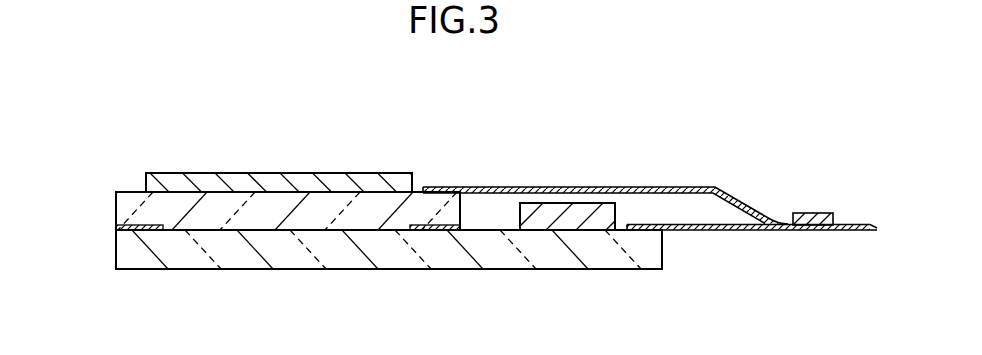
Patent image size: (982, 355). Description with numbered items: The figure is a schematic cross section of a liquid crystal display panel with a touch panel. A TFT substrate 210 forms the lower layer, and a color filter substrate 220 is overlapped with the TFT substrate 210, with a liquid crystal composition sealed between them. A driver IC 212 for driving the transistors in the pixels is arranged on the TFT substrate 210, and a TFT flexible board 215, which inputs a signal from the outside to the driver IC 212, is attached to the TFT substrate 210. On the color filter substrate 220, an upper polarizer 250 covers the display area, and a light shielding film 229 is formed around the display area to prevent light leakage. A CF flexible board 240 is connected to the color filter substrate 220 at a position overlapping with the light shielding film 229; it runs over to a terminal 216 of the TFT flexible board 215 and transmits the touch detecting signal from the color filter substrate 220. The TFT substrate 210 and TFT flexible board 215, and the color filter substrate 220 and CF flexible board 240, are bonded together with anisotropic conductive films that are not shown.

The TFT substrate 210 is at (116, 250).
The driver IC 212 is at (567, 222).
The TFT flexible board 215 is at (712, 231).
The terminal 216 is at (818, 226).
The color filter substrate 220 is at (116, 206).
The light shielding film 229 is at (116, 228).
The CF flexible board 240 is at (493, 187).
The upper polarizer 250 is at (167, 174).